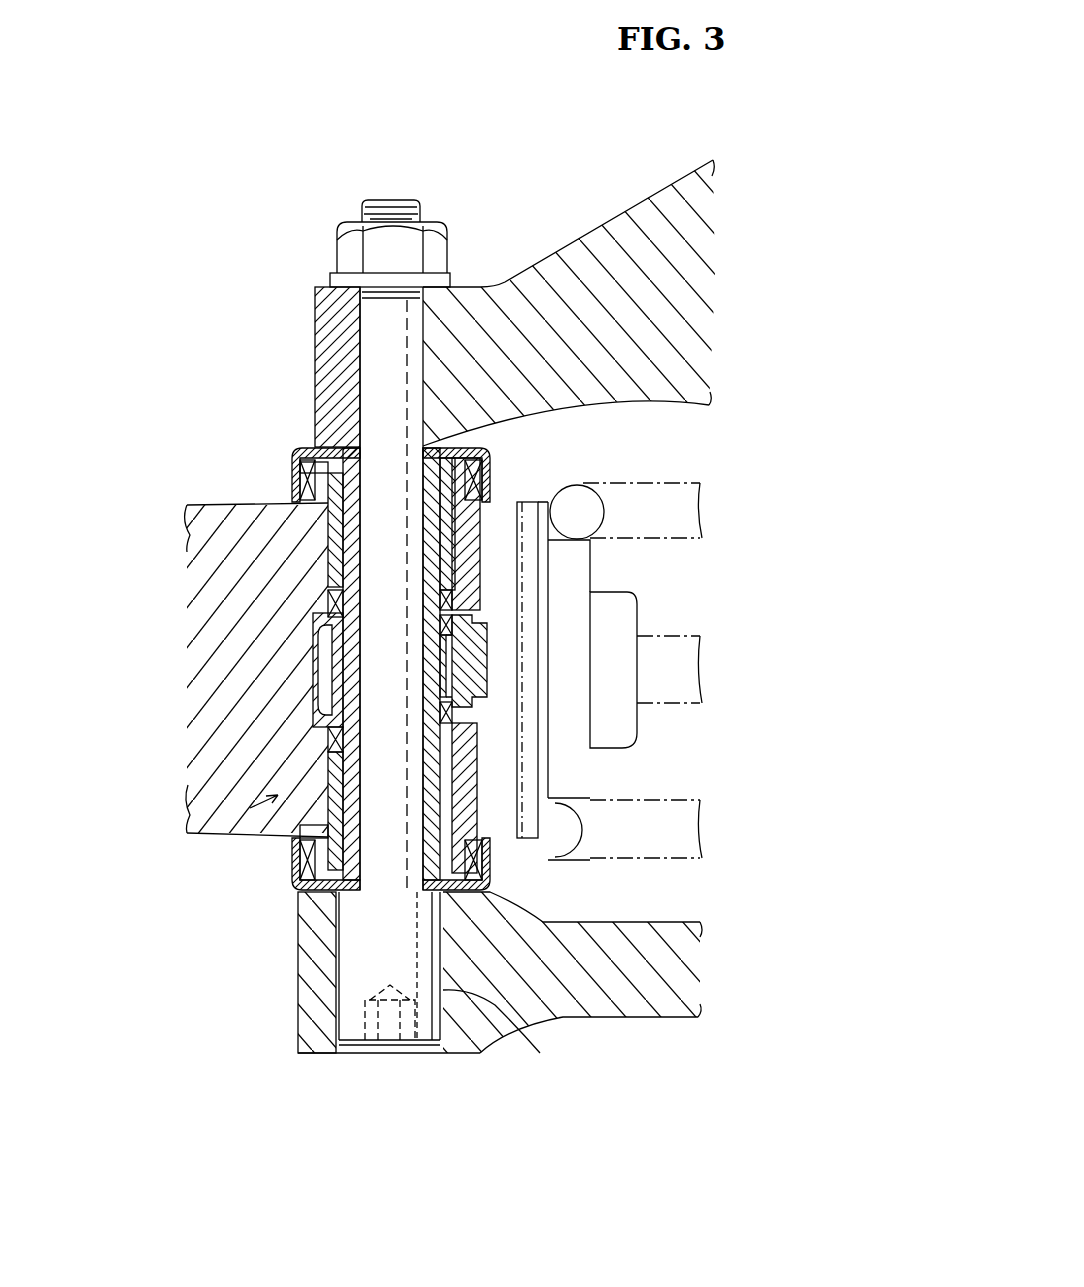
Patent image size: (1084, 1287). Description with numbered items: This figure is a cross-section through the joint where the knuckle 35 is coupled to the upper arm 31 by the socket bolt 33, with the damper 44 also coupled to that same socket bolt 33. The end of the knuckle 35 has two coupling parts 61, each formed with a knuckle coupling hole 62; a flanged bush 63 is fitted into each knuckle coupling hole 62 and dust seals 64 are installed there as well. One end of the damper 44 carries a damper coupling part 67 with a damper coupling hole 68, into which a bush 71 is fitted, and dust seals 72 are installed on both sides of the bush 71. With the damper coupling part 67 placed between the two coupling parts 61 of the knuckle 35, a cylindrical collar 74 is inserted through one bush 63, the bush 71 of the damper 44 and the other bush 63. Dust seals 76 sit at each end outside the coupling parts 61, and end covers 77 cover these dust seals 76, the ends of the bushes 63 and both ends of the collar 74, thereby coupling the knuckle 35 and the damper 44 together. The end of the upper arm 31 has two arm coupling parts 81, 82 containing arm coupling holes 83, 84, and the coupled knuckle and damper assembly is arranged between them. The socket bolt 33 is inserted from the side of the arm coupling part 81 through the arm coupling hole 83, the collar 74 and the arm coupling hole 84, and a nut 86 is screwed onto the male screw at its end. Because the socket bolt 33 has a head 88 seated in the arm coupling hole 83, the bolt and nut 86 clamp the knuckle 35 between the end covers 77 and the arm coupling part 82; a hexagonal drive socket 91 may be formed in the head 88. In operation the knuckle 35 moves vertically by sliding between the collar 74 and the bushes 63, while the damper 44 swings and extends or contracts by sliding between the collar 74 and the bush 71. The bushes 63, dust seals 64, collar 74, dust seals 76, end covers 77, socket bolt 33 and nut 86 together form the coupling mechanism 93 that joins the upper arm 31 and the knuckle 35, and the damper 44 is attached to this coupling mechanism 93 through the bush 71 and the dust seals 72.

The upper arm 31 is at (598, 224).
The socket bolt 33 is at (435, 1058).
The knuckle 35 is at (198, 503).
The damper 44 is at (695, 480).
The coupling parts 61 is at (480, 547).
The knuckle coupling holes 62 is at (330, 545).
The flanged bushes 63 is at (300, 478).
The dust seals 64 is at (330, 598).
The damper coupling part 67 is at (313, 652).
The damper coupling hole 68 is at (320, 688).
The bush 71 is at (490, 622).
The dust seals 72 is at (480, 662).
The cylindrical collar 74 is at (365, 850).
The dust seals 76 is at (497, 478).
The end covers 77 is at (310, 446).
The arm coupling part 81 is at (300, 1010).
The arm coupling part 82 is at (362, 368).
The arm coupling hole 83 is at (339, 1010).
The arm coupling hole 84 is at (315, 333).
The nut 86 is at (442, 222).
The head 88 is at (520, 1025).
The hexagonal drive socket 91 is at (392, 1025).
The coupling mechanism 93 is at (272, 798).